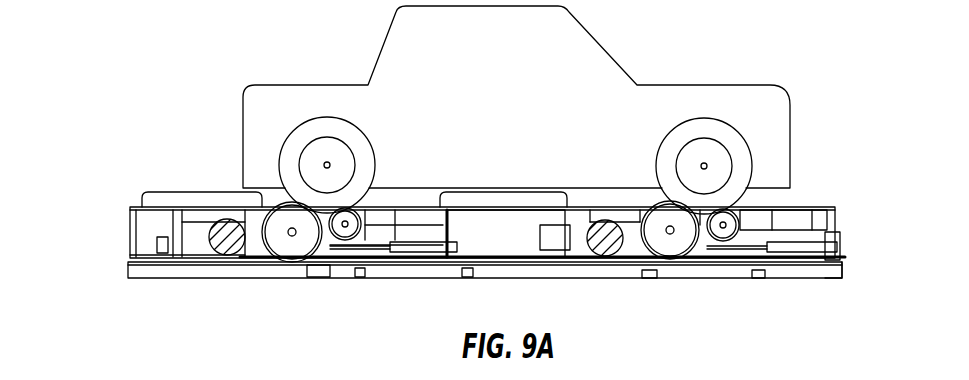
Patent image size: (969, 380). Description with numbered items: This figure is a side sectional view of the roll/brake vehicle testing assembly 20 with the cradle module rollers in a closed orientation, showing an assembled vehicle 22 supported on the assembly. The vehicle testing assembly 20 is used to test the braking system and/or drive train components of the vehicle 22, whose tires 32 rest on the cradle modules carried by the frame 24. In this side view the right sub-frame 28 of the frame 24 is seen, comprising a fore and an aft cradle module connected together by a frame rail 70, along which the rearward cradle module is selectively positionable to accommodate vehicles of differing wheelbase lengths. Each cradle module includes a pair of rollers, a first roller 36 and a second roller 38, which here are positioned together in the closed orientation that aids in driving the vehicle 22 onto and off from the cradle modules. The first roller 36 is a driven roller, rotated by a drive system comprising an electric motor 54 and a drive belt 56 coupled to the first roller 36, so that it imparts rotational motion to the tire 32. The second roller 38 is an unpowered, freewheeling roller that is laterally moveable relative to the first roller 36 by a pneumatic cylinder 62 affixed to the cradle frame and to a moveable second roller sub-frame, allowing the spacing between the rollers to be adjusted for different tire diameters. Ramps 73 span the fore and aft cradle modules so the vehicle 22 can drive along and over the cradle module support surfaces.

The vehicle testing assembly 20 is at (87, 222).
The vehicle 22 is at (680, 93).
The frame 24 is at (160, 283).
The right sub-frame 28 is at (808, 278).
The tire 32 is at (348, 135).
The first roller 36 is at (287, 247).
The second roller 38 is at (355, 263).
The electric motor 54 is at (217, 207).
The drive belt 56 is at (250, 210).
The pneumatic cylinder 62 is at (407, 242).
The frame rail 70 is at (512, 263).
The ramp 73 is at (497, 198).